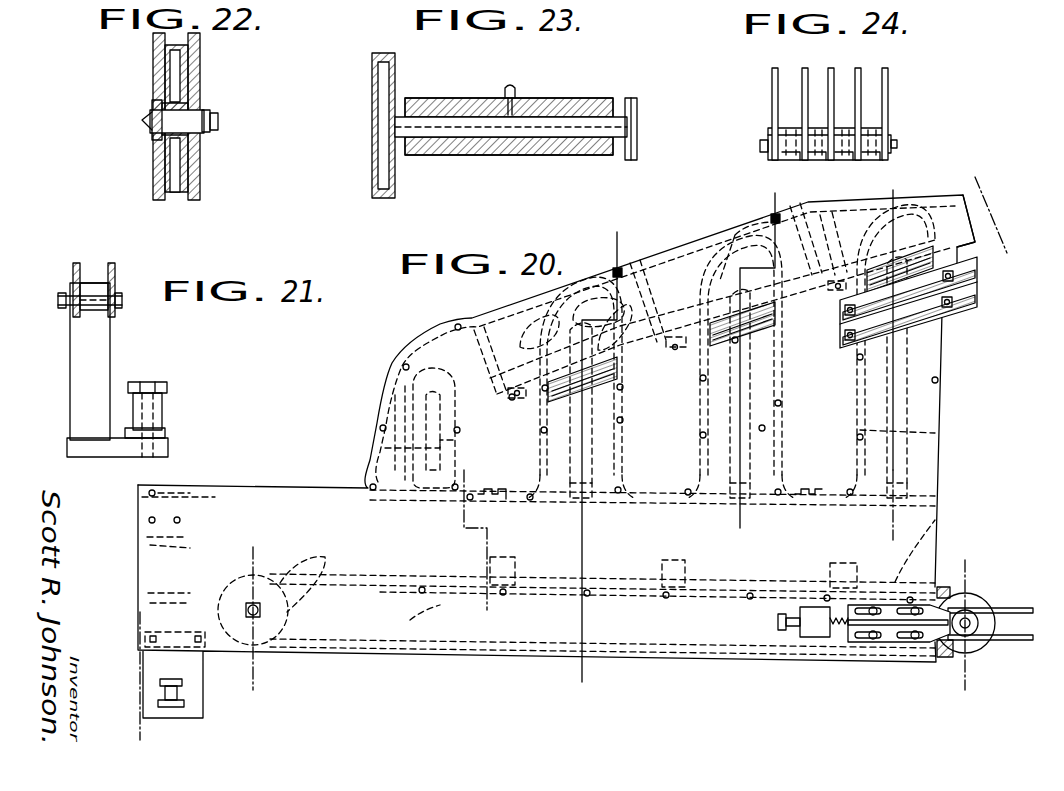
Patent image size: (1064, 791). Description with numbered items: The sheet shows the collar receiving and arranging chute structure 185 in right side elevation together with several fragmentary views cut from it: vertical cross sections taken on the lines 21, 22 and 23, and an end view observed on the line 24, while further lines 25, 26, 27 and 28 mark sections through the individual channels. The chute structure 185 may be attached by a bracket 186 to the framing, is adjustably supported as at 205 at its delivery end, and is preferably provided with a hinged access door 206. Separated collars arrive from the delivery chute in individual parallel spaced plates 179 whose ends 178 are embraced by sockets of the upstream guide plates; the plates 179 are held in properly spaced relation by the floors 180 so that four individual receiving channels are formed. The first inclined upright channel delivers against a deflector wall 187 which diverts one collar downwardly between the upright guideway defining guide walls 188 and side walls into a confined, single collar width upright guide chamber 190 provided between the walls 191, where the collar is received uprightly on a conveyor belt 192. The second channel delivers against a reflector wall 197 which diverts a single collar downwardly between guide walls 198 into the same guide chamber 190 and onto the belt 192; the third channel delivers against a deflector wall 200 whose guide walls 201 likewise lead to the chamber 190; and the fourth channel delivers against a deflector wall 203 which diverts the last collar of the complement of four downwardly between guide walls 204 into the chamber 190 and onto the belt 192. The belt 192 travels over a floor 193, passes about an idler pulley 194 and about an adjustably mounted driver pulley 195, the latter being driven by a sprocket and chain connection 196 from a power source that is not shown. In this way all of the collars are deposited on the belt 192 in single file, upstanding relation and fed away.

In FIG. 20, the ends of plates 178 is at (958, 198).
In FIG. 24, the parallel spaced plates 179 is at (835, 97).
In FIG. 20, the parallel spaced plates 179 is at (850, 218).
In FIG. 24, the floors 180 is at (850, 128).
In FIG. 20, the floors 180 is at (690, 325).
In FIG. 20, the arranging chute structure 185 is at (437, 330).
In FIG. 20, the bracket 186 is at (965, 292).
In FIG. 20, the deflector wall 187 is at (880, 230).
In FIG. 20, the guide walls 188 is at (900, 432).
In FIG. 21, the upright guide chamber 190 is at (93, 276).
In FIG. 22, the walls 191 is at (153, 168).
In FIG. 21, the walls 191 is at (73, 272).
In FIG. 22, the conveyor belt 192 is at (152, 44).
In FIG. 20, the conveyor belt 192 is at (330, 575).
In FIG. 20, the floor 193 is at (406, 623).
In FIG. 22, the idler pulley 194 is at (180, 88).
In FIG. 20, the idler pulley 194 is at (270, 597).
In FIG. 23, the driver pulley 195 is at (372, 130).
In FIG. 20, the driver pulley 195 is at (975, 597).
In FIG. 23, the sprocket and chain connection 196 is at (632, 100).
In FIG. 20, the sprocket and chain connection 196 is at (1000, 650).
In FIG. 20, the reflector wall 197 is at (738, 242).
In FIG. 20, the guide walls 198 is at (708, 390).
In FIG. 20, the deflector wall 200 is at (562, 332).
In FIG. 20, the guide walls 201 is at (620, 402).
In FIG. 20, the deflector wall 203 is at (388, 382).
In FIG. 20, the guide walls 204 is at (385, 448).
In FIG. 21, the adjustable support 205 is at (163, 414).
In FIG. 20, the adjustable support 205 is at (205, 690).
In FIG. 20, the hinged access door 206 is at (395, 556).
In FIG. 20, the section line 21— 21 is at (137, 620).
In FIG. 20, the section line 22— 22 is at (251, 550).
In FIG. 20, the section line 23— 23 is at (946, 571).
In FIG. 20, the view line 24— 24 is at (990, 185).
In FIG. 20, the section line 25— 25 is at (872, 194).
In FIG. 20, the section line 26— 26 is at (773, 200).
In FIG. 20, the section line 27— 27 is at (615, 247).
In FIG. 20, the section line 28— 28 is at (450, 472).